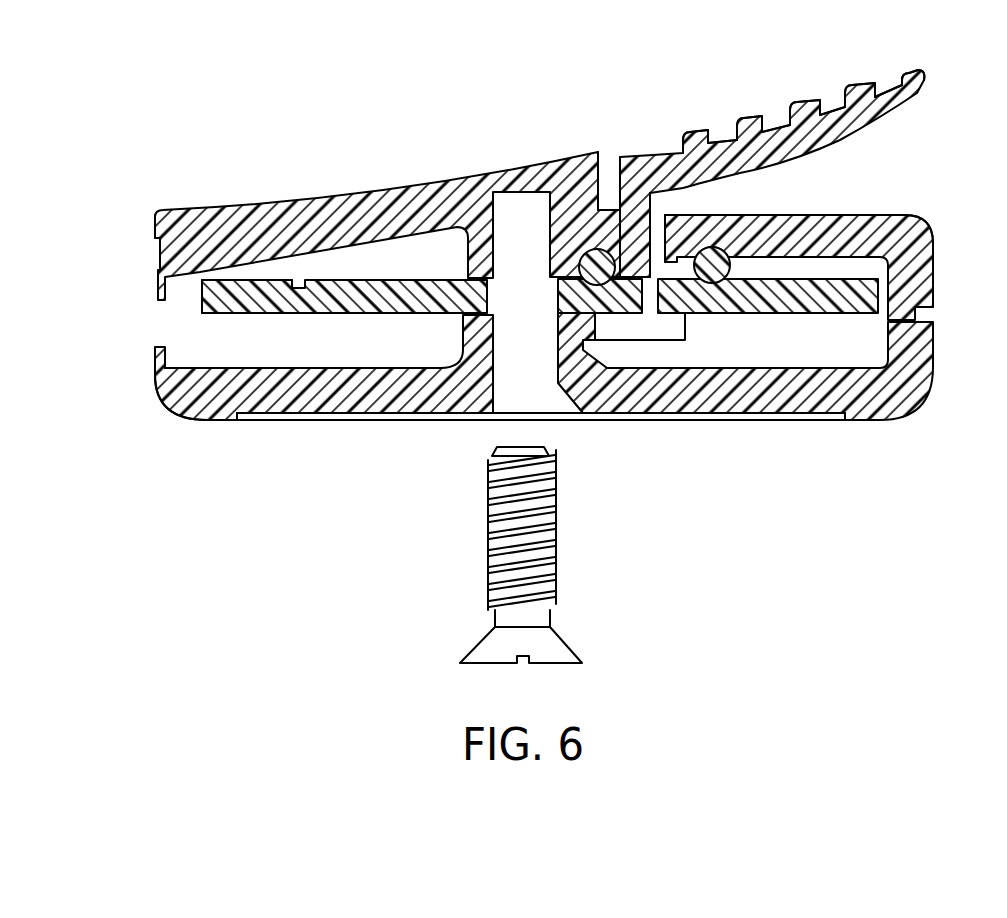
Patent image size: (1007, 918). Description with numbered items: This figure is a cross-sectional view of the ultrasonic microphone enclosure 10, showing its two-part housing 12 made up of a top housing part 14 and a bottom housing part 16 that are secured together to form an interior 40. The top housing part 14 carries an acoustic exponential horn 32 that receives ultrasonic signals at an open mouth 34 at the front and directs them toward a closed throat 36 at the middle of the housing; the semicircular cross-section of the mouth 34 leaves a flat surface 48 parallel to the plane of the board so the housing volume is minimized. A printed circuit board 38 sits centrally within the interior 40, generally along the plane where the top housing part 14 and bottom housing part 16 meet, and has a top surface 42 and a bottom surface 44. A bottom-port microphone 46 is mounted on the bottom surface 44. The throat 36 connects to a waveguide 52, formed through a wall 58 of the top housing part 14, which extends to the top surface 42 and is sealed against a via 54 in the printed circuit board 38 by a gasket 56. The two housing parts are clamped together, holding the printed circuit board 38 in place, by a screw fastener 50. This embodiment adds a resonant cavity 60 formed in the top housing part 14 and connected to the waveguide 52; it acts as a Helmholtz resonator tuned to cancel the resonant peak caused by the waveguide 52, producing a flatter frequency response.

The ultrasonic microphone enclosure 10 is at (550, 252).
The housing 12 is at (565, 393).
The top housing part 14 is at (371, 187).
The bottom housing part 16 is at (167, 393).
The acoustic exponential horn 32 is at (813, 154).
The open mouth 34 is at (918, 97).
The closed throat 36 is at (693, 185).
The printed circuit board 38 is at (492, 301).
The interior 40 is at (376, 350).
The top surface 42 is at (258, 280).
The bottom surface 44 is at (222, 316).
The microphone 46 is at (637, 330).
The flat surface 48 is at (870, 215).
The screw fastener 50 is at (487, 524).
The waveguide 52 is at (648, 258).
The via 54 is at (600, 250).
The gasket 56 is at (827, 197).
The wall 58 is at (672, 235).
The resonant cavity 60 is at (678, 258).